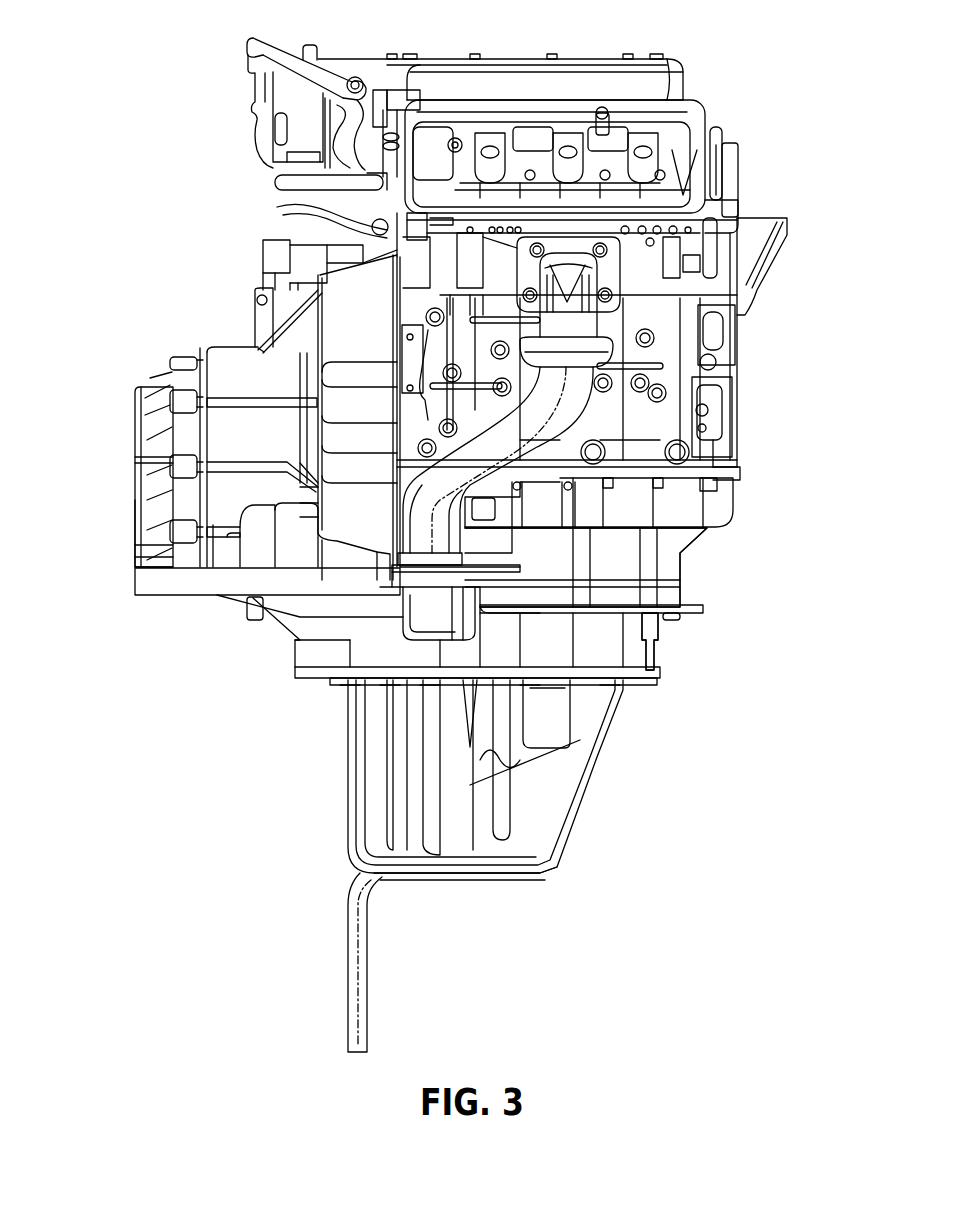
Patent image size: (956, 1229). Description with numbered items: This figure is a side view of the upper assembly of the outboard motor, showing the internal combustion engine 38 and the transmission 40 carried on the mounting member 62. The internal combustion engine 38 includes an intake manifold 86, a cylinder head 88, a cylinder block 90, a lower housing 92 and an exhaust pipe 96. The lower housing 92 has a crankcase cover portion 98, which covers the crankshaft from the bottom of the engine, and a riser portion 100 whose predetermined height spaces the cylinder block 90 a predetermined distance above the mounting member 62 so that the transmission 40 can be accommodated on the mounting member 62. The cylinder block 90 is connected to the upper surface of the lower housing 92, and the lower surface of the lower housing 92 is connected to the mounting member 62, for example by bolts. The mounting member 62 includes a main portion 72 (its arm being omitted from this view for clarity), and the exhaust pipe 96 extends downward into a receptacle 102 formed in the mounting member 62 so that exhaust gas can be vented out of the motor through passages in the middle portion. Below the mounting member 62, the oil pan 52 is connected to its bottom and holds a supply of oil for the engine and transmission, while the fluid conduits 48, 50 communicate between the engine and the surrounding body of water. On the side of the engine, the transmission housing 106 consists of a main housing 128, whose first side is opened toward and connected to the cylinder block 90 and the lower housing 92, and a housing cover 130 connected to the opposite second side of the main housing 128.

The internal combustion engine 38 is at (743, 357).
The transmission 40 is at (114, 460).
The fluid conduit 48 is at (348, 783).
The fluid conduit 50 is at (367, 958).
The oil pan 52 is at (513, 827).
The mounting member 62 is at (660, 653).
The main portion 72 is at (650, 641).
The intake manifold 86 is at (507, 59).
The cylinder head 88 is at (737, 167).
The cylinder block 90 is at (743, 413).
The lower housing 92 is at (693, 533).
The exhaust pipe 96 is at (500, 452).
The crankcase cover portion 98 is at (732, 507).
The riser portion 100 is at (586, 567).
The receptacle 102 is at (422, 617).
The transmission housing 106 is at (150, 378).
The main housing 128 is at (225, 348).
The housing cover 130 is at (140, 515).